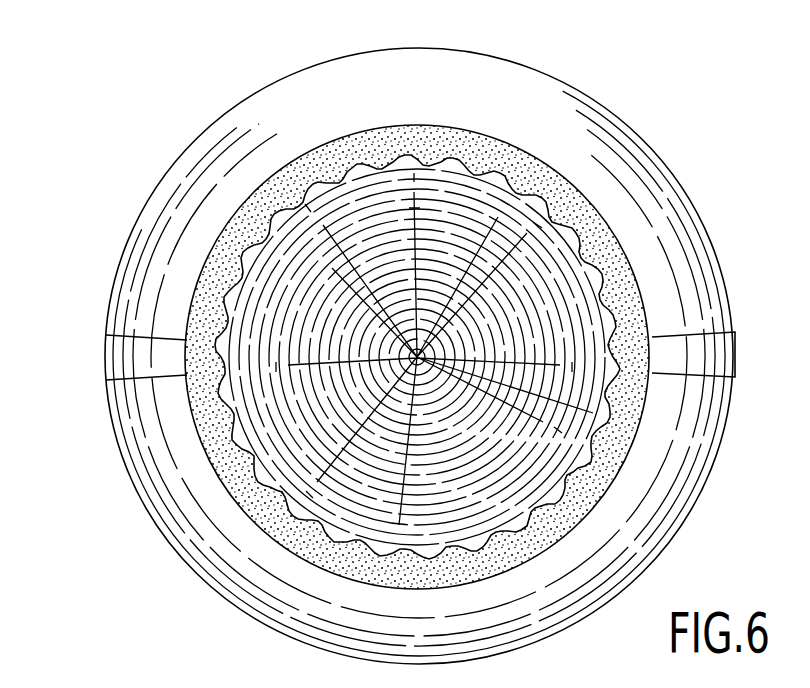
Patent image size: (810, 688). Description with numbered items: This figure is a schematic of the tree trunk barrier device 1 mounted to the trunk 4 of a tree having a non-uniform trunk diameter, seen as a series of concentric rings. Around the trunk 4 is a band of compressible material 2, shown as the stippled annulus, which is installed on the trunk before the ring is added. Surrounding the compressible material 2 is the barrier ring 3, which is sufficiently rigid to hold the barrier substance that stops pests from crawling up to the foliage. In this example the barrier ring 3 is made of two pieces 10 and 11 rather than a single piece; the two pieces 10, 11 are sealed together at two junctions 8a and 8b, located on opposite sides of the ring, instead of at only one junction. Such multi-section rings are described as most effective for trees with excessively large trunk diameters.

The barrier device 1 is at (102, 103).
The piece of barrier ring 10 is at (323, 90).
The compressible material 2 is at (288, 175).
The barrier ring 3 is at (623, 168).
The trunk 4 is at (300, 339).
The junction 8a is at (122, 355).
The junction 8b is at (713, 343).
The piece of barrier ring 11 is at (302, 603).